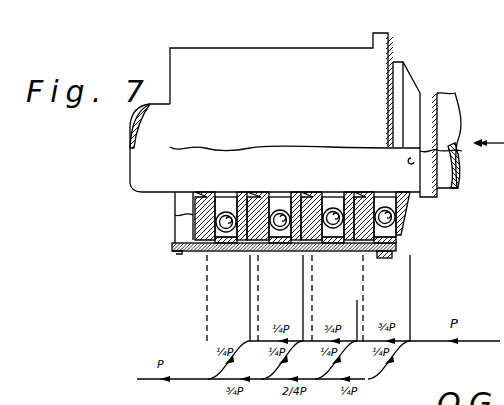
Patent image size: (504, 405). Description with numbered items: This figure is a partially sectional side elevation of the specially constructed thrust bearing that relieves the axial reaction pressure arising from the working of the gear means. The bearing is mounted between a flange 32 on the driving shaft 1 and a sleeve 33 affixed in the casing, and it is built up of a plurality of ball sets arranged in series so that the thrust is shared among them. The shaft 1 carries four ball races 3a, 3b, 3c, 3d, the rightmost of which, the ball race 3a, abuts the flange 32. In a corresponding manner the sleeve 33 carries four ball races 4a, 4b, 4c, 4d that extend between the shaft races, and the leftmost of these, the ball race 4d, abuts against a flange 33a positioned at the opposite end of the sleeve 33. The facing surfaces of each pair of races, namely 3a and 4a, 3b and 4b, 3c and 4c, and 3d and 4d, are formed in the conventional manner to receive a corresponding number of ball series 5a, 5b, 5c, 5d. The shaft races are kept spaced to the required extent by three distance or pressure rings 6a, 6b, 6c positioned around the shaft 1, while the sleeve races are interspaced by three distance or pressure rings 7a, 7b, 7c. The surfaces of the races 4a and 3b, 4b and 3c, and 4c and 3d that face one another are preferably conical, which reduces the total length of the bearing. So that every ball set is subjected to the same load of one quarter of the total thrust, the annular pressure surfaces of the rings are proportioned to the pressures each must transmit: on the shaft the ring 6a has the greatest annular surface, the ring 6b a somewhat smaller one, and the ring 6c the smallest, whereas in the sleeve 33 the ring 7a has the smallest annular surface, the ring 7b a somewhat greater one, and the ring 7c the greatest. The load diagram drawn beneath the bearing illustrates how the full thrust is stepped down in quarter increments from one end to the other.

The driving shaft 1 is at (443, 109).
The flange 32 is at (488, 153).
The ball race 3a is at (406, 209).
The ball race 3b is at (352, 193).
The ball race 3c is at (290, 193).
The ball race 3d is at (238, 192).
The ball race 4a is at (370, 252).
The ball race 4b is at (315, 252).
The ball race 4c is at (268, 252).
The ball race 4d is at (184, 251).
The ball series 5a is at (393, 250).
The ball series 5b is at (350, 249).
The ball series 5c is at (284, 252).
The ball series 5d is at (191, 213).
The distance ring 6a is at (381, 191).
The distance ring 6b is at (324, 193).
The distance ring 6c is at (277, 193).
The distance ring 7a is at (336, 252).
The distance ring 7b is at (283, 252).
The distance ring 7c is at (220, 252).
The sleeve 33 is at (237, 245).
The flange 33a is at (174, 243).